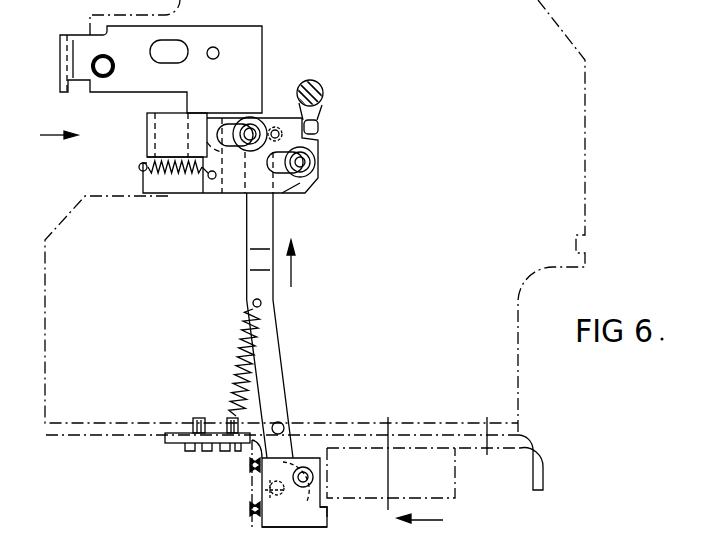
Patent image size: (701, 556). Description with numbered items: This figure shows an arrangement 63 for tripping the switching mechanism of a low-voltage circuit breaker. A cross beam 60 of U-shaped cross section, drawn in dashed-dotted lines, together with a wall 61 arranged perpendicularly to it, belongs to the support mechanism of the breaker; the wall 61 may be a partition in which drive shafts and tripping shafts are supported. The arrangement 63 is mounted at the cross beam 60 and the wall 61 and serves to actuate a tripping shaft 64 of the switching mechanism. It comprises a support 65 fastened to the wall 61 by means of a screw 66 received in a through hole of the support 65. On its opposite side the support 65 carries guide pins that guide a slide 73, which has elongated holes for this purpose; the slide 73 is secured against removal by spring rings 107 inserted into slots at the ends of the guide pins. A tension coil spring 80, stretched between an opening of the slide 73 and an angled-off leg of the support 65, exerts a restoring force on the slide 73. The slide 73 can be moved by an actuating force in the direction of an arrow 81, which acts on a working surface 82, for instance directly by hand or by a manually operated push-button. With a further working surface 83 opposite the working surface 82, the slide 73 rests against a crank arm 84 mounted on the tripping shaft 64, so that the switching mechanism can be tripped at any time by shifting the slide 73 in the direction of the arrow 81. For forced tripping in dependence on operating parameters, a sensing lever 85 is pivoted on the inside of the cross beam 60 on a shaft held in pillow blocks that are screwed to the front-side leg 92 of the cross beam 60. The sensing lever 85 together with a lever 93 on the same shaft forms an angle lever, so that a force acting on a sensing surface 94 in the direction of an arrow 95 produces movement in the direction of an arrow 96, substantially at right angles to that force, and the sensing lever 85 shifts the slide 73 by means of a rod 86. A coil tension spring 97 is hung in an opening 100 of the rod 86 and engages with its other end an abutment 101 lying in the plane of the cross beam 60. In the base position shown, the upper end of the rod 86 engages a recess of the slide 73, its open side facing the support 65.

The cross beam 60 is at (543, 470).
The wall 61 is at (518, 369).
The arrangement 63 is at (338, 322).
The tripping shaft 64 is at (320, 88).
The support 65 is at (304, 54).
The screw 66 is at (113, 68).
The slide 73 is at (147, 118).
The tension coil spring 80 is at (177, 176).
The arrow 81 is at (55, 153).
The working surface 82 is at (147, 142).
The further working surface 83 is at (305, 136).
The crank arm 84 is at (319, 112).
The sensing lever 85 is at (373, 549).
The rod 86 is at (333, 363).
The leg 92 is at (256, 488).
The lever 93 is at (297, 525).
The sensing surface 94 is at (327, 515).
The arrow 95 is at (443, 520).
The arrow 96 is at (292, 272).
The coil tension spring 97 is at (229, 360).
The opening 100 is at (253, 301).
The abutment 101 is at (178, 443).
The spring ring 107 is at (305, 167).